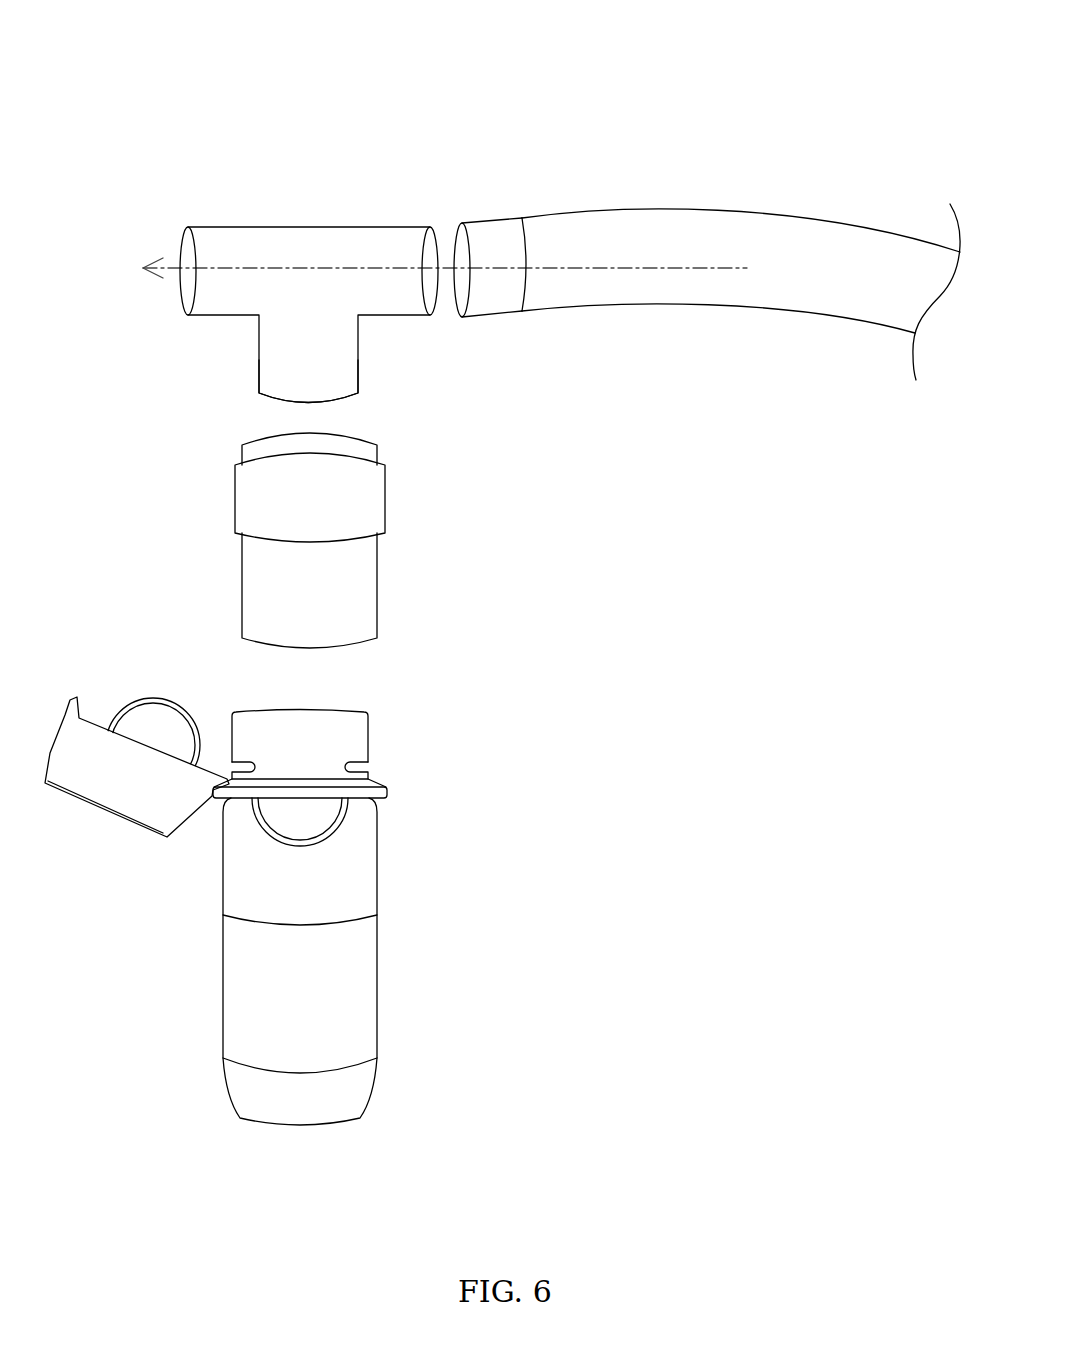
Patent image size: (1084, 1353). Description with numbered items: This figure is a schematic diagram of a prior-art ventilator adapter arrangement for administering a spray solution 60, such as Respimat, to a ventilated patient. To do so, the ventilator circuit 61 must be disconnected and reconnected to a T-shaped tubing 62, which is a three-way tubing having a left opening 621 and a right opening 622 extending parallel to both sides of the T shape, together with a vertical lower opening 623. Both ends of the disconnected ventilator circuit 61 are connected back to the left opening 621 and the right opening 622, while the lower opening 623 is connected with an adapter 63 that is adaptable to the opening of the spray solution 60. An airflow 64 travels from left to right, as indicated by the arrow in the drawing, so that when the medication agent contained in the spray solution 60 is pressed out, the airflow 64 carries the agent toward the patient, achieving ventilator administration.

The spray solution 60 is at (355, 738).
The ventilator circuit 61 is at (745, 226).
The T-shaped tubing 62 is at (700, 88).
The adapter 63 is at (252, 603).
The airflow 64 is at (583, 266).
The left opening 621 is at (190, 292).
The right opening 622 is at (432, 298).
The lower opening 623 is at (340, 400).